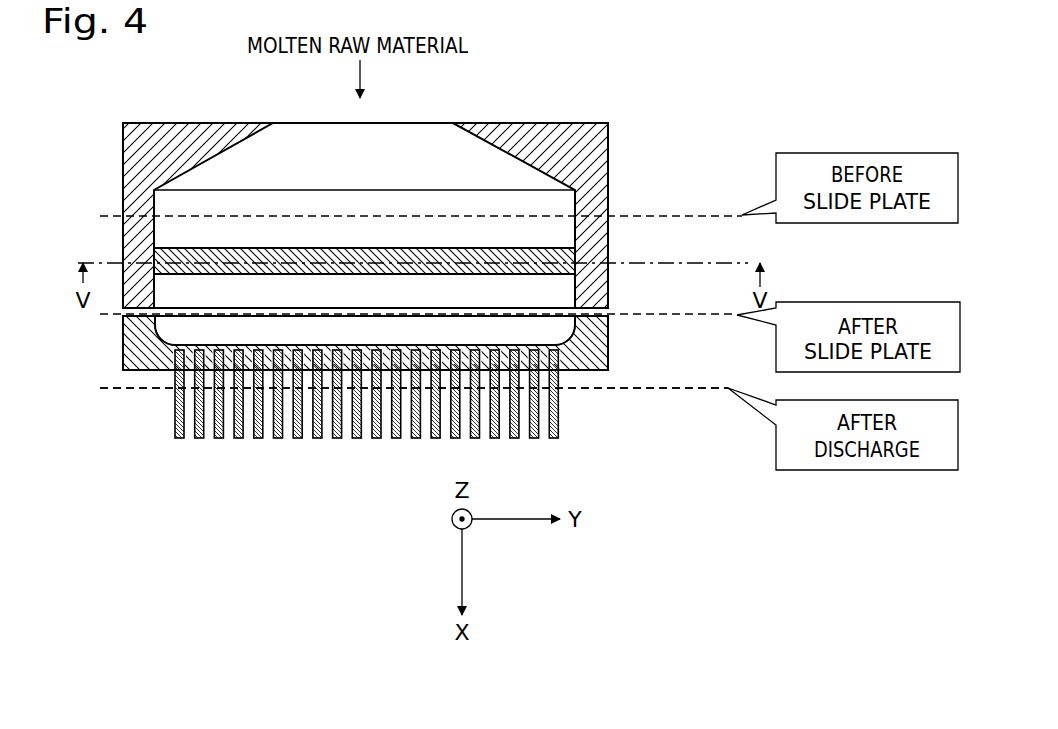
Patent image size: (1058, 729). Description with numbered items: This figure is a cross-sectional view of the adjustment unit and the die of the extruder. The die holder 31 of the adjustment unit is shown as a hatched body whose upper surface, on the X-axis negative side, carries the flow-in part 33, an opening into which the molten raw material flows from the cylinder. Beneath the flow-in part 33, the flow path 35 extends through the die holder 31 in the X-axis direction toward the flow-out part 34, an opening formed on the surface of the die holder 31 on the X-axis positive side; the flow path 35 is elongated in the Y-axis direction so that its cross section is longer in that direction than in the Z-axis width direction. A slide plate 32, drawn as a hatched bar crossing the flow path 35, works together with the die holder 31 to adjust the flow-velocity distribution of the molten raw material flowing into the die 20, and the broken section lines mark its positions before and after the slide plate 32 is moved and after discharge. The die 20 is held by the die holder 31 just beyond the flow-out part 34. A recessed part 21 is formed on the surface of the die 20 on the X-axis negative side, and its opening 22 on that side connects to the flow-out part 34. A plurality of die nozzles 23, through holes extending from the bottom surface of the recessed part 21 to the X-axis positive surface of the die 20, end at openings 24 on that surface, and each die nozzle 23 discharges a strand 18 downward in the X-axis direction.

The strand 18 is at (600, 450).
The die 20 is at (608, 357).
The recessed part 21 is at (575, 317).
The opening 22 is at (575, 292).
The die nozzle 23 is at (605, 390).
The opening 24 is at (600, 420).
The die holder 31 is at (608, 148).
The slide plate 32 is at (550, 248).
The flow-in part 33 is at (452, 122).
The flow-out part 34 is at (555, 299).
The flow path 35 is at (570, 203).